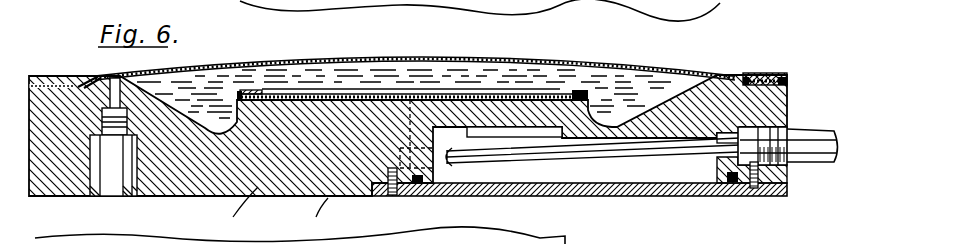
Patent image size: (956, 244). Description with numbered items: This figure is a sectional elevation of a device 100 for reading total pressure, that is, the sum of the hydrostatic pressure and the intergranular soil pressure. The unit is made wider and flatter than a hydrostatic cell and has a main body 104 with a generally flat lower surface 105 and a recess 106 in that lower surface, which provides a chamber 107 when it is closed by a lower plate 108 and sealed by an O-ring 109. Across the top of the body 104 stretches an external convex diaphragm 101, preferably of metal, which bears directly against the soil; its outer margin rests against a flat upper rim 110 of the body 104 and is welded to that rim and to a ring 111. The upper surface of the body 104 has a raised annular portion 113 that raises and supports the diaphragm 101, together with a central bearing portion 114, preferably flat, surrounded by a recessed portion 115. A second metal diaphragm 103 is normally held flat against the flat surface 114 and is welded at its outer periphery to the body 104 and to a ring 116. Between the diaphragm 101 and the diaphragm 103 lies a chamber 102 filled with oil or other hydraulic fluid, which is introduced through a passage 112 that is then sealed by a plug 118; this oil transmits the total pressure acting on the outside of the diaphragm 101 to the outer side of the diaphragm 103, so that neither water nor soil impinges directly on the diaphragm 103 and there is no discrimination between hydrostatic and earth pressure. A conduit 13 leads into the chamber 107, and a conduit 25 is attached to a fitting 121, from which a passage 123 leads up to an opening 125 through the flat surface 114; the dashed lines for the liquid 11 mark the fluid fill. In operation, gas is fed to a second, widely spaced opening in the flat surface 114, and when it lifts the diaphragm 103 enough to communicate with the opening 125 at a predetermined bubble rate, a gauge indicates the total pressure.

The device 100 is at (80, 206).
The external convex diaphragm 101 is at (320, 58).
The liquid 11 is at (377, 63).
The chamber 102 is at (562, 68).
The metal diaphragm 103 is at (460, 98).
The main body 104 is at (229, 207).
The lower surface 105 is at (304, 213).
The recess 106 is at (655, 139).
The chamber 107 is at (603, 172).
The lower plate 108 is at (545, 188).
The O-ring 109 is at (419, 194).
The flat upper rim 110 is at (745, 80).
The ring 111 is at (777, 72).
The passage 112 is at (107, 124).
The raised annular portion 113 is at (740, 42).
The central bearing portion 114 is at (393, 98).
The recessed portion 115 is at (210, 127).
The ring 116 is at (260, 97).
The plug 118 is at (112, 198).
The fitting 121 is at (450, 160).
The passage 123 is at (408, 124).
The opening 125 is at (443, 88).
The conduit 25 is at (520, 153).
The conduit 13 is at (803, 133).